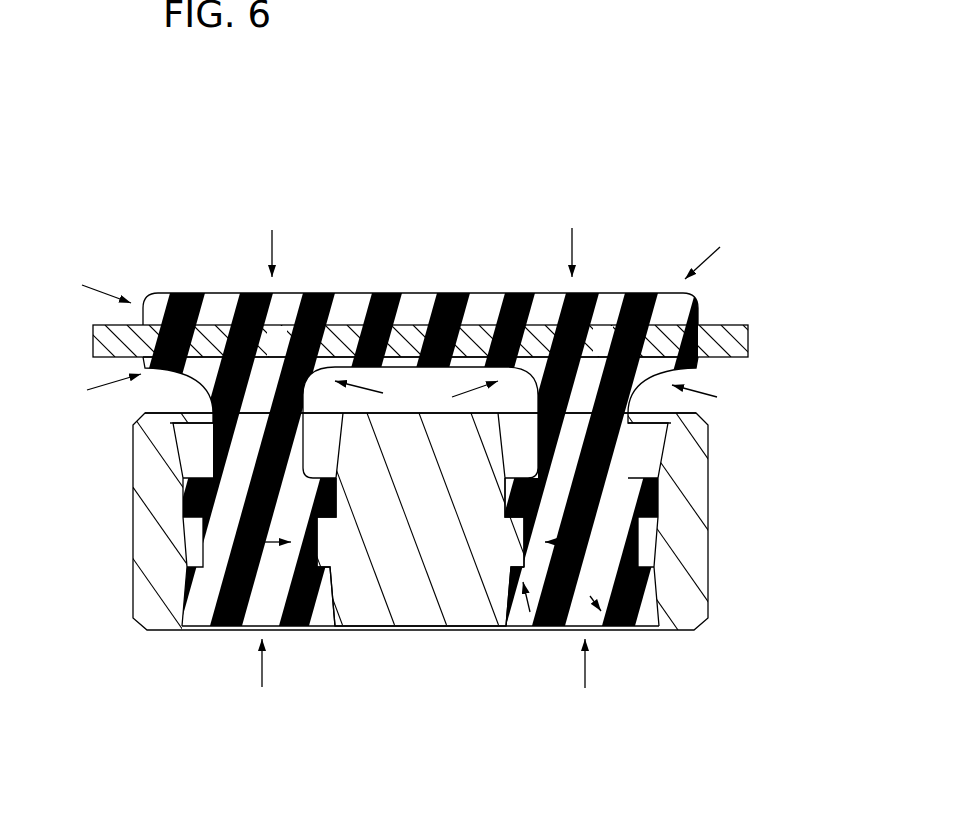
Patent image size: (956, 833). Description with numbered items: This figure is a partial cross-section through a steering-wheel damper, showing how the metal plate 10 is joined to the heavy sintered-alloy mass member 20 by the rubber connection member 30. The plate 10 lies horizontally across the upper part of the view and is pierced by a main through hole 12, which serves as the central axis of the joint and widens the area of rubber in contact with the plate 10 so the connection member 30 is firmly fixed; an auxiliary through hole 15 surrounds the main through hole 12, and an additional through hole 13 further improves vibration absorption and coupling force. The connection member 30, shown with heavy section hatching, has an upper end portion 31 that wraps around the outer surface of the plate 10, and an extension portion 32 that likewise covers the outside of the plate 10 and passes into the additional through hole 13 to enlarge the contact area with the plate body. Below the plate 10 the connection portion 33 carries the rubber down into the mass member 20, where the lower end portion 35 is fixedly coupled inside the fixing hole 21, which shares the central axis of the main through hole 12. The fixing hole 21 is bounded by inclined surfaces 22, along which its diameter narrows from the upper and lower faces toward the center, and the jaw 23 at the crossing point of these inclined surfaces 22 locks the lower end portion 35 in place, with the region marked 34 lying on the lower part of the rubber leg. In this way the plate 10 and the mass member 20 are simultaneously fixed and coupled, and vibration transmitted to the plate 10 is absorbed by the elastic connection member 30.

The plate 10 is at (741, 324).
The main through hole 12 is at (233, 291).
The additional through hole 13 is at (448, 291).
The auxiliary through hole 15 is at (160, 292).
The mass member 20 is at (407, 634).
The fixing hole 21 is at (187, 412).
The inclined surface 22 is at (185, 455).
The jaw 23 is at (205, 548).
The connection member 30 is at (225, 632).
The upper end portion 31 is at (247, 291).
The extension portion 32 is at (427, 312).
The connection portion 33 is at (708, 428).
The second engaging portion 34 is at (630, 598).
The lower end portion 35 is at (637, 548).